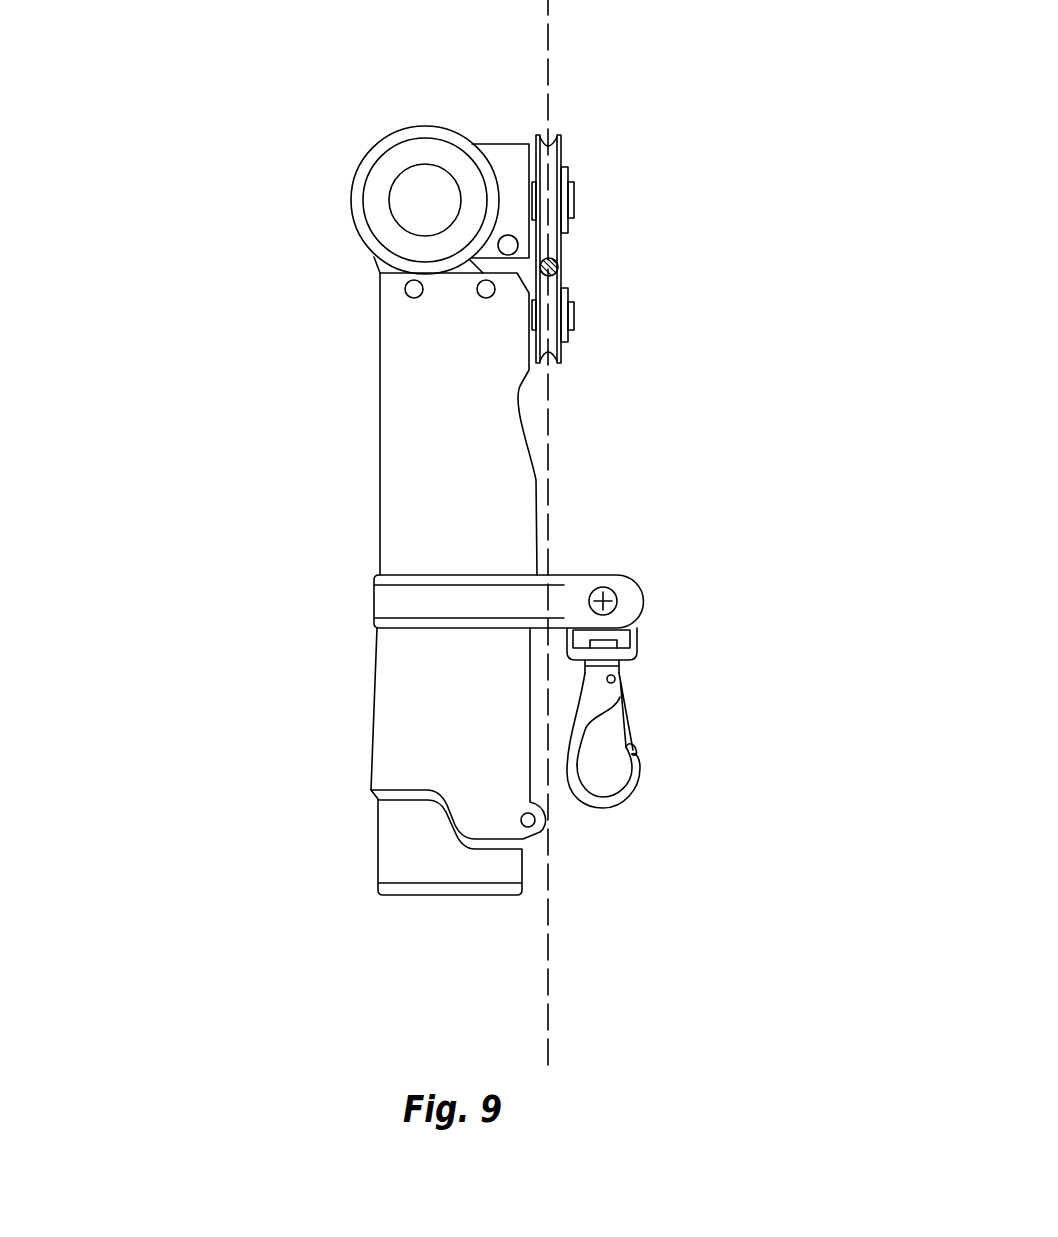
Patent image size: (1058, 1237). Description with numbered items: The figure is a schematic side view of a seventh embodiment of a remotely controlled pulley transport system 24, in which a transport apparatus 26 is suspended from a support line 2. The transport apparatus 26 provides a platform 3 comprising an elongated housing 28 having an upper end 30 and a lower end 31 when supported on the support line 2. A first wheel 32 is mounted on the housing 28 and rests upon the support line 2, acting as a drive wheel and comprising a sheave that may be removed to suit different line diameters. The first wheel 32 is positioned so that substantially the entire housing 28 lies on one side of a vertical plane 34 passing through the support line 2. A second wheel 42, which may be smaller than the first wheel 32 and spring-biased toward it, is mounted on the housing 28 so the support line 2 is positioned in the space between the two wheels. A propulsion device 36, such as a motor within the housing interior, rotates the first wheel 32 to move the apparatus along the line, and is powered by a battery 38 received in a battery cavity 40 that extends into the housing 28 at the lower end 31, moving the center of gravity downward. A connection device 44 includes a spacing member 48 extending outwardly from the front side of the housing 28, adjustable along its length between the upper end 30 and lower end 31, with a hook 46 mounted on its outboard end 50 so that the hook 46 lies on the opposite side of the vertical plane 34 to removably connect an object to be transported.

The support line 2 is at (558, 268).
The platform 3 is at (342, 460).
The remotely controlled pulley transport system 24 is at (622, 227).
The transport apparatus 26 is at (355, 307).
The housing 28 is at (413, 401).
The upper end 30 is at (392, 145).
The lower end 31 is at (415, 768).
The first wheel 32 is at (562, 145).
The vertical plane 34 is at (548, 452).
The propulsion device 36 is at (405, 900).
The battery 38 is at (407, 845).
The battery cavity 40 is at (473, 848).
The second wheel 42 is at (562, 355).
The connection device 44 is at (645, 577).
The hook 46 is at (632, 773).
The spacing member 48 is at (383, 597).
The outboard end 50 is at (633, 603).